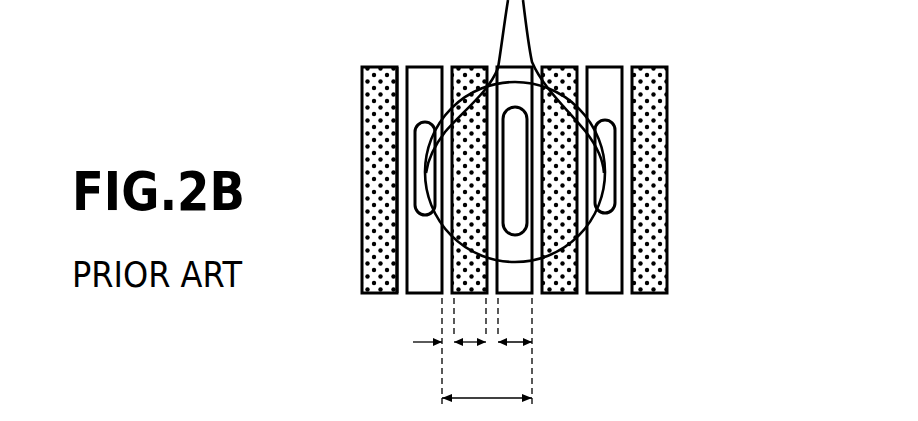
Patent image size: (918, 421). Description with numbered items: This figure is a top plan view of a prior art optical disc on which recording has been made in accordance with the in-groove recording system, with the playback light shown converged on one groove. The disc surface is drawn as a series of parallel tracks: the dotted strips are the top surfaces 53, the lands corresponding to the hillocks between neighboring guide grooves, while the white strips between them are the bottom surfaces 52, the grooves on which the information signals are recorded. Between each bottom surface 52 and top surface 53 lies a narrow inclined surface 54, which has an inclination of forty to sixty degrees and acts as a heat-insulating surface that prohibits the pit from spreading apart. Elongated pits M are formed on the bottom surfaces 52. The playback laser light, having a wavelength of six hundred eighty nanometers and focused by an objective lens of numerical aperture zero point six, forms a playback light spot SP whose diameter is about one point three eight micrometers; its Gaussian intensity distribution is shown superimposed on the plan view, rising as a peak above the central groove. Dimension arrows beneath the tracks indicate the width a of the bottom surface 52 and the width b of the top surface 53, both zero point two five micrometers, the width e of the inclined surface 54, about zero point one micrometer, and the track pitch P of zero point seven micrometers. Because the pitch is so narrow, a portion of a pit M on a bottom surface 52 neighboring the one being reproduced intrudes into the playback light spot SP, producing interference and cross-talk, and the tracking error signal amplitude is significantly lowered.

The bottom surface 52 is at (423, 280).
The top surface 53 is at (377, 272).
The inclined surface 54 is at (403, 178).
The pit M is at (415, 145).
The playback light spot SP is at (585, 103).
The width of the bottom surface a is at (515, 352).
The width of the top surface b is at (470, 322).
The width of the inclined surface e is at (434, 352).
The track pitch P is at (487, 388).